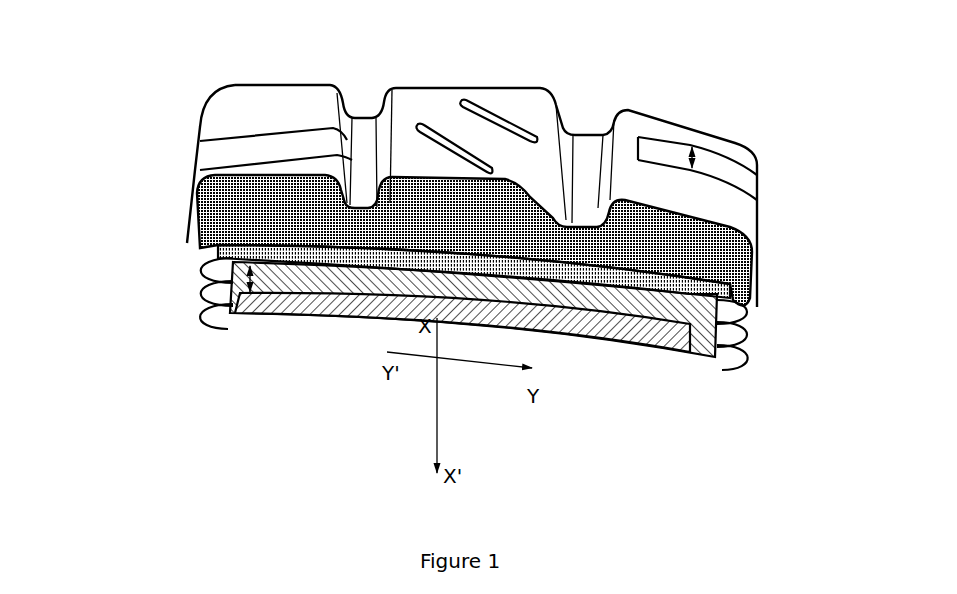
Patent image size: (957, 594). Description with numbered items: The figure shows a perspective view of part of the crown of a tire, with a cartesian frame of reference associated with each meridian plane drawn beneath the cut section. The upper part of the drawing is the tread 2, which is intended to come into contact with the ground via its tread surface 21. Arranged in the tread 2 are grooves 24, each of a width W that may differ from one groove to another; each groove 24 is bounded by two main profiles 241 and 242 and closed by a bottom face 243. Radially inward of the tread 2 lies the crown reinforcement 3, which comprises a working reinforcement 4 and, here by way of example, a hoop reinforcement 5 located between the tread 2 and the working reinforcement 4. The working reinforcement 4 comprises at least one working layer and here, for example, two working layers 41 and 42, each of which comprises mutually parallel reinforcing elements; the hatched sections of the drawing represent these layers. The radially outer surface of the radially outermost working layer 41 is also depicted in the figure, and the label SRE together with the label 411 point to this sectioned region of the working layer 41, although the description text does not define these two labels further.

The tread 2 is at (495, 158).
The tread surface 21 is at (448, 103).
The grooves 24 is at (252, 150).
The main profile 241 is at (347, 100).
The main profile 242 is at (377, 167).
The bottom face 243 is at (366, 137).
The crown reinforcement 3 is at (85, 203).
The working reinforcement 4 is at (135, 242).
The working layer 41 is at (429, 331).
The sensor base plate 411 is at (330, 284).
The working layer 42 is at (225, 306).
The hoop reinforcement 5 is at (283, 253).
The sensing region SRE is at (610, 302).
The width W is at (692, 143).